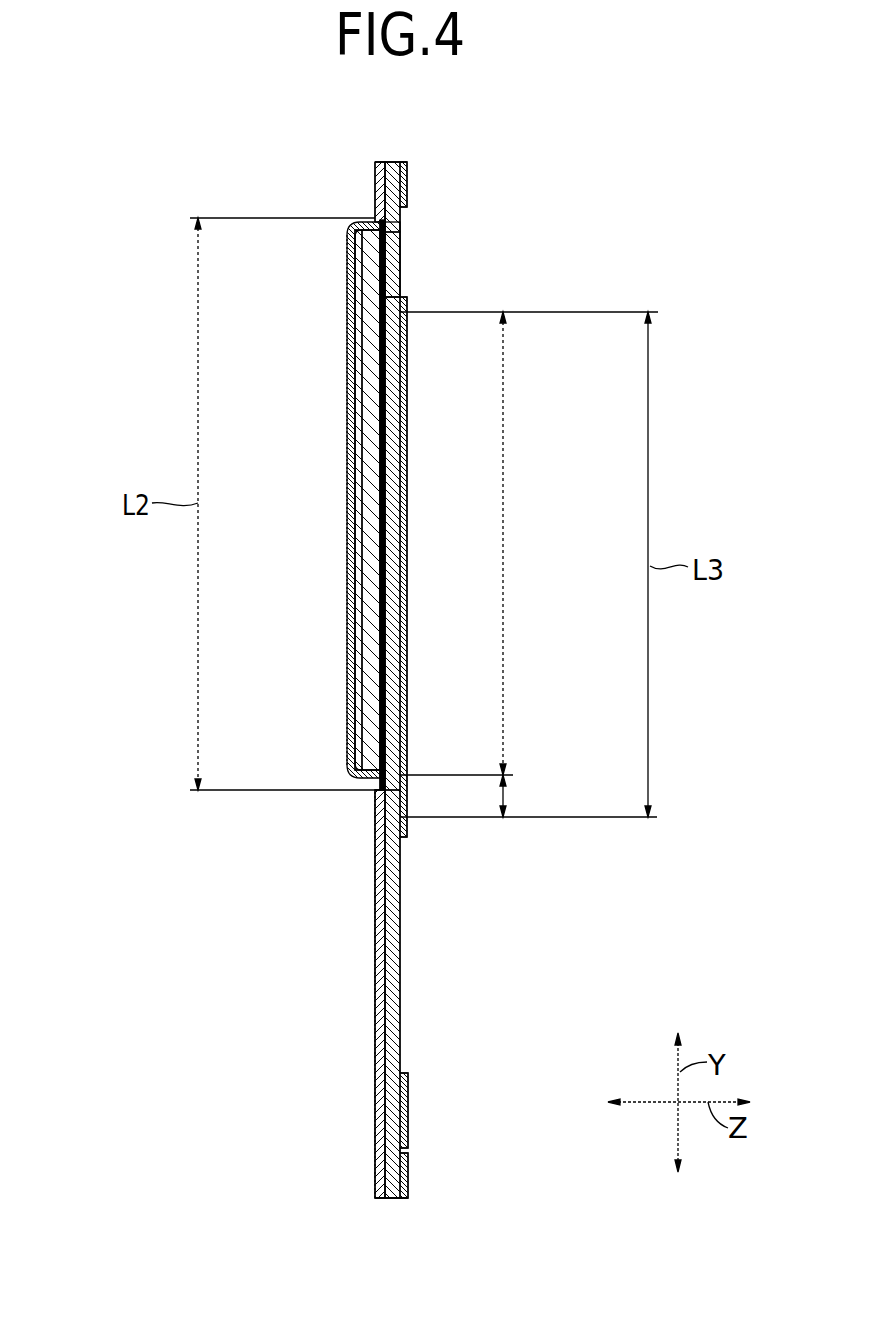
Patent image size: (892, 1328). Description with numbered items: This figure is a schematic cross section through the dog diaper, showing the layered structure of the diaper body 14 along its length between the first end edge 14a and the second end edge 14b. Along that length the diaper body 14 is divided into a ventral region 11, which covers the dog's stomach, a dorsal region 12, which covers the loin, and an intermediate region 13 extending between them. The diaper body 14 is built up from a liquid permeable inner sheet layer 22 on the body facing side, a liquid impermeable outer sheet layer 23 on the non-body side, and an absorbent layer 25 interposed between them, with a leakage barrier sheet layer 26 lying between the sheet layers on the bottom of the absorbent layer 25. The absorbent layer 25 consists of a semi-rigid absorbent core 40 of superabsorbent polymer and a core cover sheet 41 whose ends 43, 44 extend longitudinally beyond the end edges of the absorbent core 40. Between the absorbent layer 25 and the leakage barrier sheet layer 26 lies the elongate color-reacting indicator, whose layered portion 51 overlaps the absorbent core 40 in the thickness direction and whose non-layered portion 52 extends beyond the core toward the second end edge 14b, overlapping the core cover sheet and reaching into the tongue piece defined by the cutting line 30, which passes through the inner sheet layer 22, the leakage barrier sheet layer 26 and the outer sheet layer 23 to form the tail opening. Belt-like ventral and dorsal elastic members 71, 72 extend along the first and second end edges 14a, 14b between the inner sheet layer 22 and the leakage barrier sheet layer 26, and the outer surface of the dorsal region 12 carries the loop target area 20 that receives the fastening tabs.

The diaper body 14 is at (360, 183).
The first end edge 14a is at (387, 161).
The second end edge 14b is at (390, 1200).
The ventral region 11 is at (401, 193).
The dorsal region 12 is at (401, 1043).
The intermediate region 13 is at (406, 553).
The ventral elastic member 71 is at (406, 172).
The dorsal elastic member 72 is at (409, 1178).
The target area 20 is at (409, 1110).
The inner sheet layer 22 is at (348, 409).
The outer sheet layer 23 is at (400, 268).
The absorbent layer 25 is at (275, 633).
The leakage barrier sheet layer 26 is at (398, 611).
The cutting line 30 is at (378, 853).
The absorbent core 40 is at (368, 648).
The core cover sheet 41 is at (352, 684).
The front end of core cover sheet 43 is at (399, 234).
The rear end of core cover sheet 44 is at (401, 791).
The layered portion 51 is at (506, 545).
The non-layered portion 52 is at (506, 796).